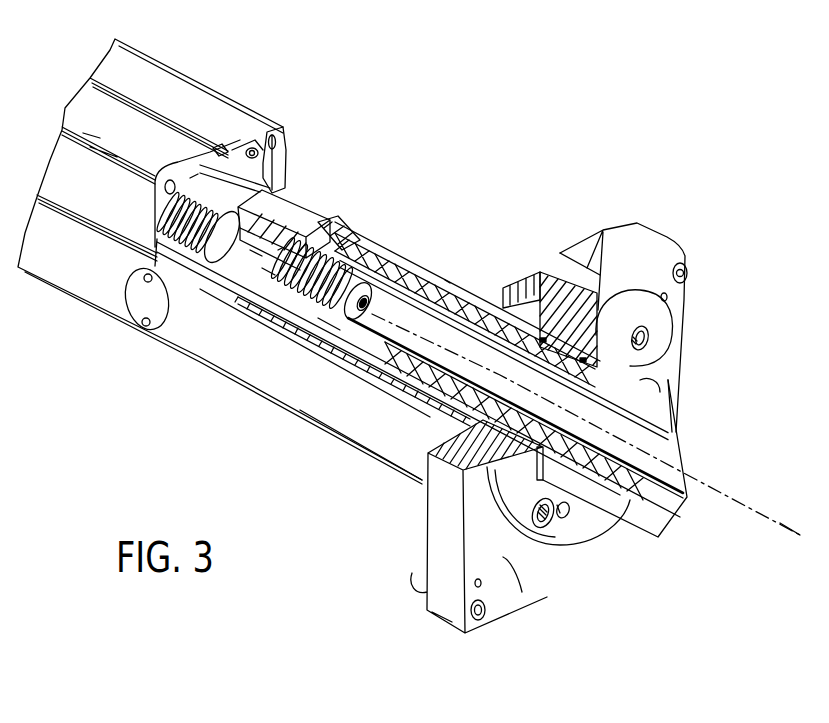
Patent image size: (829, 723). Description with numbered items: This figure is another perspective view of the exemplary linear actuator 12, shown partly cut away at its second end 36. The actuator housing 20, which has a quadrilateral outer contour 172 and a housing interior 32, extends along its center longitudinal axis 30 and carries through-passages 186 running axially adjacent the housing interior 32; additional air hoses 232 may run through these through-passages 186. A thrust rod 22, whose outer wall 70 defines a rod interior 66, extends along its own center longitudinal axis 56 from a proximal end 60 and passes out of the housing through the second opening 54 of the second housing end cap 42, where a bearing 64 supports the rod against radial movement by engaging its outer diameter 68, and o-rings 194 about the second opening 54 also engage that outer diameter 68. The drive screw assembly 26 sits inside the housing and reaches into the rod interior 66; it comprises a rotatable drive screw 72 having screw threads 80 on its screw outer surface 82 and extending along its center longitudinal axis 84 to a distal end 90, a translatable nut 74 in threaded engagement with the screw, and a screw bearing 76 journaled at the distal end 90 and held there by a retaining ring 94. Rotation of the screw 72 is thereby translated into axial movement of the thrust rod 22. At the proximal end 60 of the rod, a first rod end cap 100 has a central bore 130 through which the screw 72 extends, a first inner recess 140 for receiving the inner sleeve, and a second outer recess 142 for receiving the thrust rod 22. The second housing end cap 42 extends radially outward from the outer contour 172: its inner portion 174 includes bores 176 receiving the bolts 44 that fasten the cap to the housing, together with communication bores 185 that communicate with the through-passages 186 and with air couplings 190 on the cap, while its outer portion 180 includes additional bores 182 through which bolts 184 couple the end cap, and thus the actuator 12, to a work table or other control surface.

The linear actuator 12 is at (678, 101).
The actuator housing 20 is at (230, 108).
The thrust rod 22 is at (648, 518).
The drive screw assembly 26 is at (191, 256).
The center longitudinal axis 30 is at (725, 497).
The housing interior 32 is at (283, 160).
The second end 36 is at (690, 222).
The second housing end cap 42 is at (433, 543).
The bolts 44 is at (592, 540).
The second opening 54 is at (613, 366).
The center longitudinal axis 56 is at (778, 526).
The proximal end 60 is at (387, 232).
The bearing 64 is at (172, 295).
The rod interior 66 is at (447, 360).
The outer diameter 68 is at (472, 295).
The outer wall 70 is at (447, 280).
The rotatable drive screw 72 is at (325, 270).
The translatable nut 74 is at (212, 236).
The screw bearing 76 is at (367, 300).
The screw threads 80 is at (163, 226).
The screw outer surface 82 is at (292, 312).
The center longitudinal axis 84 is at (700, 483).
The distal end 90 is at (328, 318).
The retaining ring 94 is at (330, 325).
The first rod end cap 100 is at (303, 212).
The central bore 130 is at (255, 248).
The first inner recess 140 is at (268, 270).
The second outer recess 142 is at (297, 215).
The outer contour 172 is at (408, 453).
The inner portion 174 is at (568, 535).
The bores 176 is at (653, 341).
The outer portion 180 is at (503, 557).
The additional bores 182 is at (486, 616).
The bolts 184 is at (678, 273).
The communication bores 185 is at (567, 504).
The through-passages 186 is at (190, 178).
The air couplings 190 is at (668, 296).
The o-rings 194 is at (584, 360).
The additional air hoses 232 is at (284, 192).